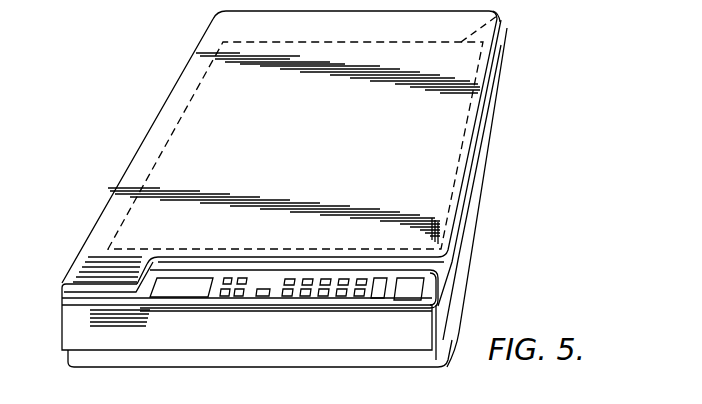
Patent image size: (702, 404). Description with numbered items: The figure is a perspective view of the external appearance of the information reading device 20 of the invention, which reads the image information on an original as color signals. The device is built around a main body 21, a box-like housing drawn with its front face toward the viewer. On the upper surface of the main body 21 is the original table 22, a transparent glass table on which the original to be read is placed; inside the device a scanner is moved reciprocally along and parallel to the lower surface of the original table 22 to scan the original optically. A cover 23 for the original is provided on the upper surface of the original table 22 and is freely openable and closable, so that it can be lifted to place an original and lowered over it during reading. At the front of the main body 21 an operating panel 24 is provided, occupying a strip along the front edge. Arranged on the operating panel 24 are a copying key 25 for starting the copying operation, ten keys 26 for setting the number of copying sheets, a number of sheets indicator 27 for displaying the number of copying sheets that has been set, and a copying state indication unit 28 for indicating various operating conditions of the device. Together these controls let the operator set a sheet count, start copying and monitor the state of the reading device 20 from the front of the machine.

The information reading device 20 is at (497, 174).
The main body 21 is at (312, 360).
The original table 22 is at (503, 21).
The cover 23 is at (168, 100).
The operating panel 24 is at (428, 291).
The copying key 25 is at (408, 299).
The ten keys 26 is at (340, 276).
The number of sheets indicator 27 is at (262, 298).
The copying state indication unit 28 is at (190, 288).